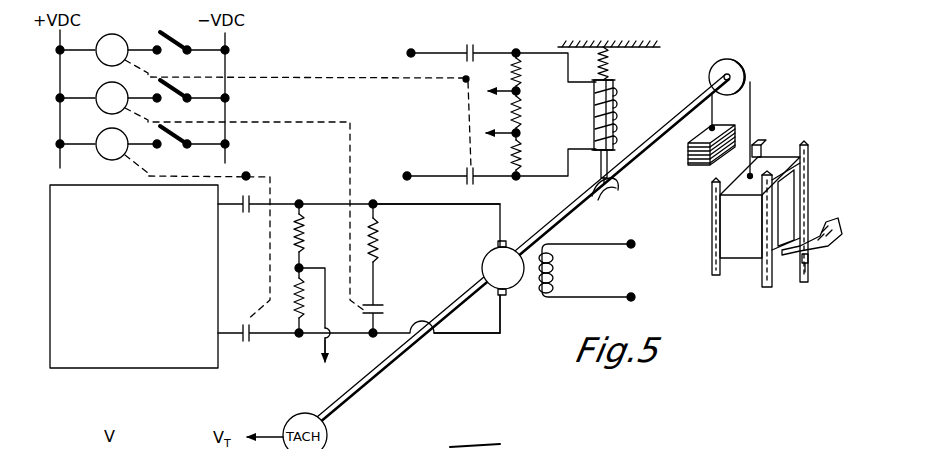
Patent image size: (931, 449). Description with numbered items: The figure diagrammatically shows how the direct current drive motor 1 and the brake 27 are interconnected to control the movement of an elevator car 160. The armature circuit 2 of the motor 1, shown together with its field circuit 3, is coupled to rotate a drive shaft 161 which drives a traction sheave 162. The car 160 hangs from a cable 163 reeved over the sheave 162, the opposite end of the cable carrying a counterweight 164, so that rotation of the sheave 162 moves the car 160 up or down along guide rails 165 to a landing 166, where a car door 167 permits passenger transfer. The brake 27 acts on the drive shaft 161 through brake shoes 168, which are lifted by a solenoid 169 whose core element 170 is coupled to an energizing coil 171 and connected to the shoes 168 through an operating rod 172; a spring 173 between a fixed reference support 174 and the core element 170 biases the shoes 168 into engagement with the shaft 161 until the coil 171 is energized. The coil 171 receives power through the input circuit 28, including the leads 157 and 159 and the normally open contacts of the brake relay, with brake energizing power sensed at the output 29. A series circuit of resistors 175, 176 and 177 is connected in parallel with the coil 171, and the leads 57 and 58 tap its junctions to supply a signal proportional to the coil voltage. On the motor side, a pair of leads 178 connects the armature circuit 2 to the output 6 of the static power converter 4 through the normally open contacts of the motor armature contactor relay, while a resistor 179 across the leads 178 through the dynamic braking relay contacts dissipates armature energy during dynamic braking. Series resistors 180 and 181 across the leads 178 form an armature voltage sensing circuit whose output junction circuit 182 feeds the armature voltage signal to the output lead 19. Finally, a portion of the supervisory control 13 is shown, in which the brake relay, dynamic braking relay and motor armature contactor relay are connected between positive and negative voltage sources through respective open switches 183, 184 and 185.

The direct current drive motor 1 is at (528, 307).
The armature circuit 2 is at (506, 294).
The field circuit 3 is at (587, 282).
The static power converter 4 is at (134, 294).
The output 6 is at (258, 281).
The supervisory control 13 is at (192, 88).
The output lead 19 is at (329, 368).
The brake 27 is at (629, 36).
The input circuit 28 is at (395, 39).
The output 29 is at (554, 50).
The lead 57 is at (499, 79).
The lead 58 is at (499, 121).
The lead 157 is at (499, 177).
The lead 159 is at (445, 54).
The elevator car 160 is at (782, 192).
The drive shaft 161 is at (522, 249).
The traction sheave 162 is at (756, 77).
The cable 163 is at (755, 130).
The counterweight 164 is at (696, 162).
The guide rails 165 is at (767, 223).
The landing 166 is at (830, 235).
The car door 167 is at (815, 206).
The brake shoes 168 is at (624, 198).
The solenoid 169 is at (639, 116).
The core element 170 is at (632, 148).
The energizing coil 171 is at (584, 115).
The operating rod 172 is at (568, 182).
The spring 173 is at (633, 111).
The fixed reference support 174 is at (636, 63).
The resistor 175 is at (537, 74).
The resistor 176 is at (537, 117).
The resistor 177 is at (533, 160).
The leads 178 is at (436, 286).
The resistor 179 is at (396, 268).
The resistor 180 is at (319, 236).
The resistor 181 is at (281, 300).
The output junction circuit 182 is at (323, 297).
The open switch 183 is at (158, 29).
The open switch 184 is at (192, 88).
The open switch 185 is at (192, 134).